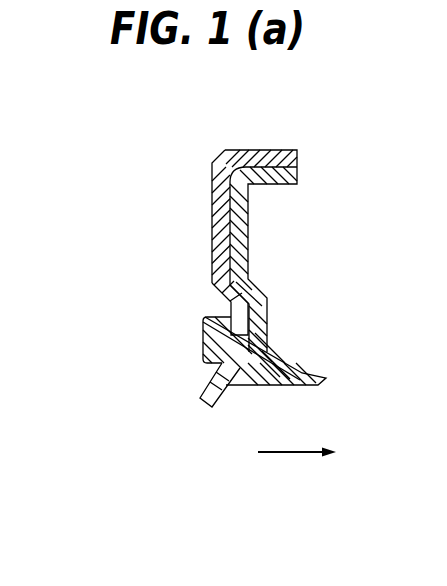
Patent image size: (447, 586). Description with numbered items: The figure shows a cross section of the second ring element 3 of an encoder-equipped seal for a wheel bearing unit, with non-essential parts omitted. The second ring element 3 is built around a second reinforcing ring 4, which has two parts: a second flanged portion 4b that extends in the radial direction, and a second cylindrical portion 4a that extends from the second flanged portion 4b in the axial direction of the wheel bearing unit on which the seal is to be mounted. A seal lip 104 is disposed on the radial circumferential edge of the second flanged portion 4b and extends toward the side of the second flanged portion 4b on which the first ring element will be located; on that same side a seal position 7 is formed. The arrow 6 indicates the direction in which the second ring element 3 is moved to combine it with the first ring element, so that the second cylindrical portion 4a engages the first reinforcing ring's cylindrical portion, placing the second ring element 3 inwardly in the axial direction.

The second ring element 3 is at (322, 166).
The second reinforcing ring 4 is at (113, 270).
The second cylindrical portion 4a is at (239, 150).
The second flanged portion 4b is at (213, 247).
The seal position 7 is at (248, 243).
The seal lip 104 is at (322, 379).
The arrow 6 is at (280, 452).